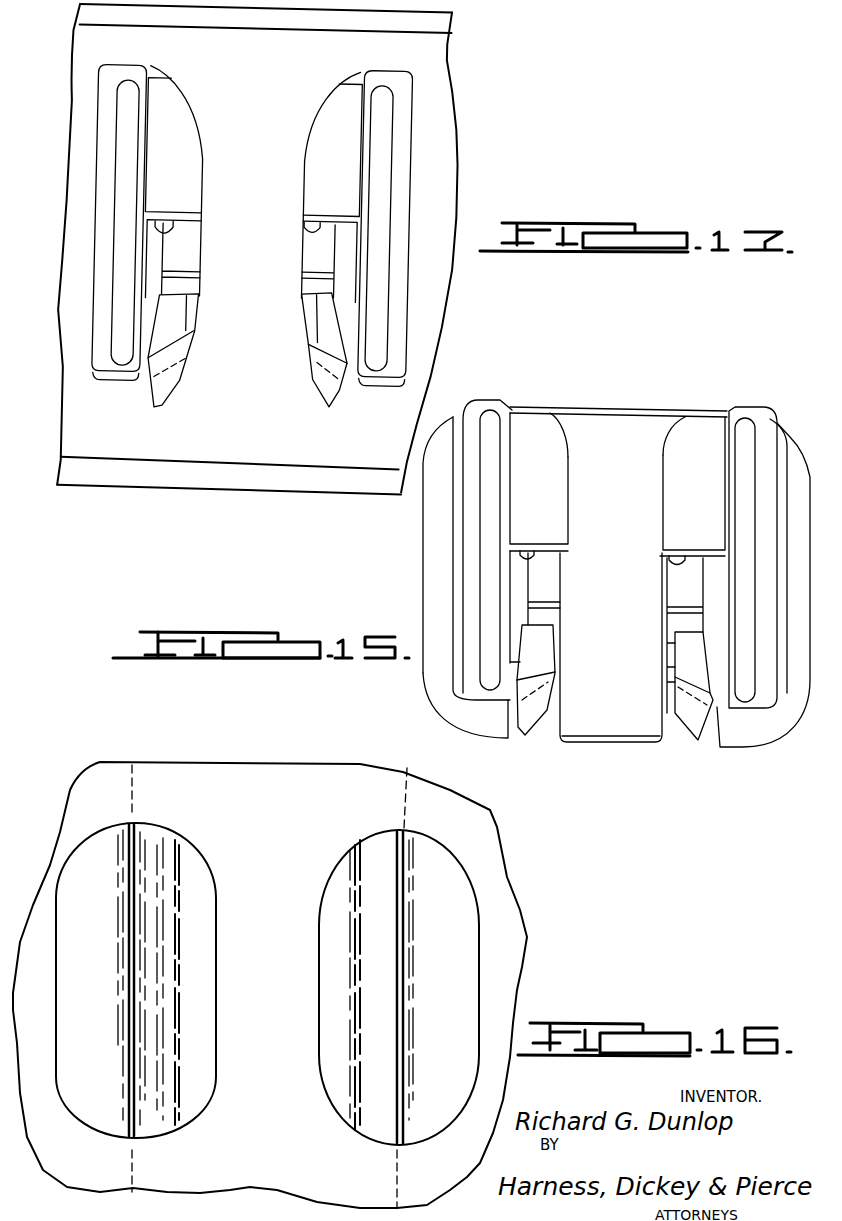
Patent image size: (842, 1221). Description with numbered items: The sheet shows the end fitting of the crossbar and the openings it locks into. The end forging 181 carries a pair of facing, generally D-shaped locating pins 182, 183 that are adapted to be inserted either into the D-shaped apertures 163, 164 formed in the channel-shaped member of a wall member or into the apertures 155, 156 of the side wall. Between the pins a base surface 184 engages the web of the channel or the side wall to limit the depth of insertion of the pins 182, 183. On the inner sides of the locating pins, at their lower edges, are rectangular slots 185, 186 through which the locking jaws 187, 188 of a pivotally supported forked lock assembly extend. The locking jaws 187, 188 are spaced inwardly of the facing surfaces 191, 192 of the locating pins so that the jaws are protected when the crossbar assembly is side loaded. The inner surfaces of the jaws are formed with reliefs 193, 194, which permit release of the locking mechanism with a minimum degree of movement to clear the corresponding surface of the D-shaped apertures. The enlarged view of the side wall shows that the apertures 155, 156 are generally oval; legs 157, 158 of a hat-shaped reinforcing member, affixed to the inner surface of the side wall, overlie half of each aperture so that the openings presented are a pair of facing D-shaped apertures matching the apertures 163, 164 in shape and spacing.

In FIG. 16, the aperture 155 is at (63, 877).
In FIG. 16, the aperture 156 is at (463, 870).
In FIG. 16, the leg 157 is at (107, 938).
In FIG. 16, the leg 158 is at (455, 968).
In FIG. 15, the D-shaped aperture 163 is at (171, 99).
In FIG. 17, the D-shaped aperture 163 is at (539, 478).
In FIG. 15, the D-shaped aperture 164 is at (332, 99).
In FIG. 17, the D-shaped aperture 164 is at (694, 483).
In FIG. 17, the end forging 181 is at (611, 396).
In FIG. 15, the locating pin 182 is at (131, 58).
In FIG. 17, the locating pin 182 is at (475, 400).
In FIG. 15, the locating pin 183 is at (386, 71).
In FIG. 17, the locating pin 183 is at (750, 404).
In FIG. 17, the base surface 184 is at (640, 518).
In FIG. 15, the rectangular slot 185 is at (174, 237).
In FIG. 17, the rectangular slot 185 is at (540, 556).
In FIG. 15, the rectangular slot 186 is at (311, 229).
In FIG. 17, the rectangular slot 186 is at (685, 564).
In FIG. 15, the locking jaw 187 is at (176, 332).
In FIG. 17, the locking jaw 187 is at (537, 655).
In FIG. 15, the locking jaw 188 is at (318, 350).
In FIG. 17, the locking jaw 188 is at (690, 645).
In FIG. 15, the facing surface 191 is at (195, 158).
In FIG. 17, the facing surface 191 is at (568, 455).
In FIG. 15, the facing surface 192 is at (322, 131).
In FIG. 17, the facing surface 192 is at (663, 475).
In FIG. 15, the relief 193 is at (173, 397).
In FIG. 17, the relief 193 is at (540, 722).
In FIG. 15, the relief 194 is at (320, 390).
In FIG. 17, the relief 194 is at (683, 728).